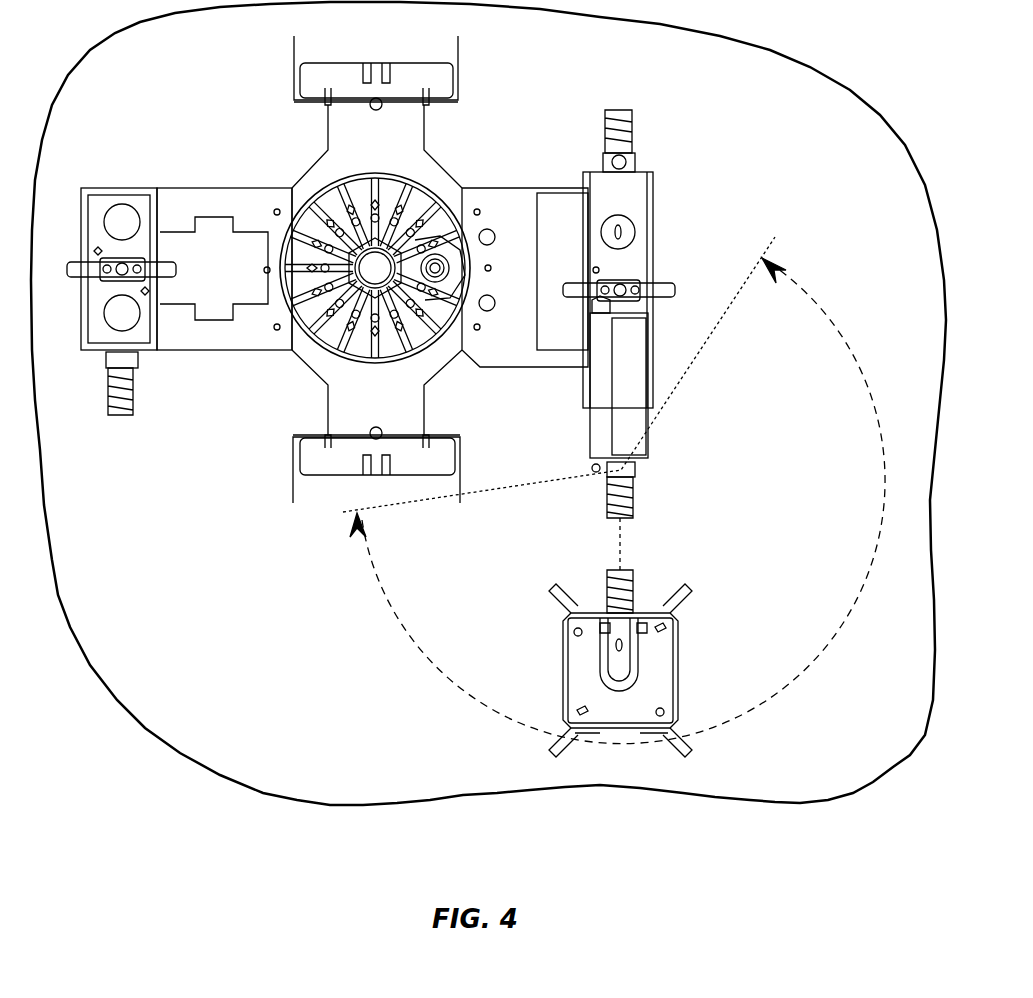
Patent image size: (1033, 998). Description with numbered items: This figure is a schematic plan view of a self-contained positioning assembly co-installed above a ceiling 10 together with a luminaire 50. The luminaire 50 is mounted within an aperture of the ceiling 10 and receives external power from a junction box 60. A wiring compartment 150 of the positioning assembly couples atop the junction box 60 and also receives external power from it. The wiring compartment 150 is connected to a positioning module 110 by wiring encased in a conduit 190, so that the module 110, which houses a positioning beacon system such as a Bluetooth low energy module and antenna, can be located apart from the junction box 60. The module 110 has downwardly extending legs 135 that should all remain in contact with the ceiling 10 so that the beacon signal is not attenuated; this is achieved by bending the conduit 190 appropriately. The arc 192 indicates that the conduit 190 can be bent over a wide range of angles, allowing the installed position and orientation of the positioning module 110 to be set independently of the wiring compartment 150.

The ceiling 10 is at (791, 163).
The luminaire 50 is at (408, 182).
The junction box 60 is at (640, 197).
The positioning module 110 is at (690, 665).
The legs 135 is at (550, 596).
The wiring compartment 150 is at (602, 434).
The conduit 190 is at (630, 585).
The arc 192 is at (378, 578).